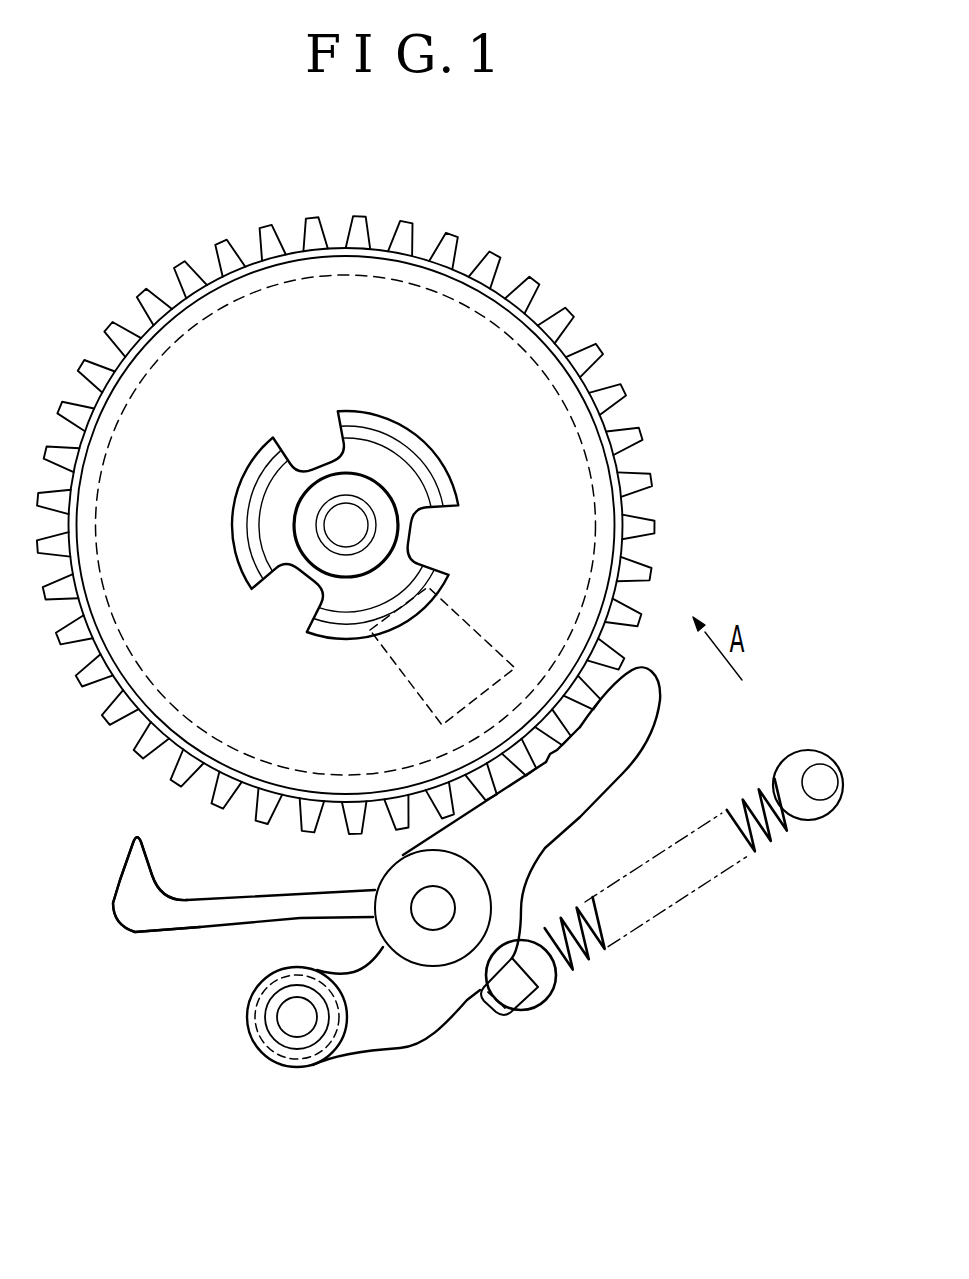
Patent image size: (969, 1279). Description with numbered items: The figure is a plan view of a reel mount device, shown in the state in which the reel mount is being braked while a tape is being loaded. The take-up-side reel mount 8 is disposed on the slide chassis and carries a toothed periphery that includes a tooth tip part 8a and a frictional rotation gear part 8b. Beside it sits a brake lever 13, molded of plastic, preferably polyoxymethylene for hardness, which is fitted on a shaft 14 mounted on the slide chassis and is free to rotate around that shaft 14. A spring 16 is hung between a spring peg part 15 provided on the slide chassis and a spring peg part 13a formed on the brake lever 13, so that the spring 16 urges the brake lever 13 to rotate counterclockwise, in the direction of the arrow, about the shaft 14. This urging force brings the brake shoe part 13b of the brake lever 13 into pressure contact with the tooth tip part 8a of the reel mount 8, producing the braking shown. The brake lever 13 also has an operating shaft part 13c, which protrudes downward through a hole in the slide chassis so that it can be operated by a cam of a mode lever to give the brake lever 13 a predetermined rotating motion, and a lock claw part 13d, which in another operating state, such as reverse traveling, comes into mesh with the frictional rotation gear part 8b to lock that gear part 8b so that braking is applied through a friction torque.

The take-up-side reel mount 8 is at (513, 385).
The tooth tip part 8a is at (602, 353).
The frictional rotation gear part 8b is at (607, 400).
The brake lever 13 is at (602, 763).
The spring peg part 13a is at (537, 1008).
The brake shoe part 13b is at (551, 753).
The operating shaft part 13c is at (295, 1022).
The lock claw part 13d is at (140, 908).
The shaft 14 is at (432, 918).
The spring peg part 15 is at (815, 797).
The spring 16 is at (593, 950).